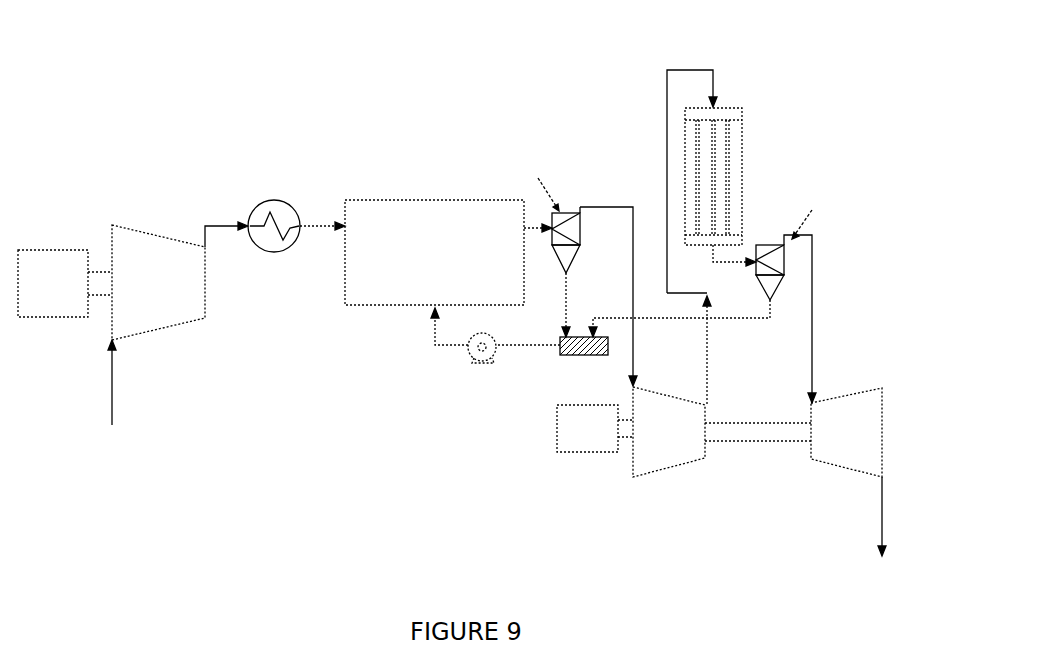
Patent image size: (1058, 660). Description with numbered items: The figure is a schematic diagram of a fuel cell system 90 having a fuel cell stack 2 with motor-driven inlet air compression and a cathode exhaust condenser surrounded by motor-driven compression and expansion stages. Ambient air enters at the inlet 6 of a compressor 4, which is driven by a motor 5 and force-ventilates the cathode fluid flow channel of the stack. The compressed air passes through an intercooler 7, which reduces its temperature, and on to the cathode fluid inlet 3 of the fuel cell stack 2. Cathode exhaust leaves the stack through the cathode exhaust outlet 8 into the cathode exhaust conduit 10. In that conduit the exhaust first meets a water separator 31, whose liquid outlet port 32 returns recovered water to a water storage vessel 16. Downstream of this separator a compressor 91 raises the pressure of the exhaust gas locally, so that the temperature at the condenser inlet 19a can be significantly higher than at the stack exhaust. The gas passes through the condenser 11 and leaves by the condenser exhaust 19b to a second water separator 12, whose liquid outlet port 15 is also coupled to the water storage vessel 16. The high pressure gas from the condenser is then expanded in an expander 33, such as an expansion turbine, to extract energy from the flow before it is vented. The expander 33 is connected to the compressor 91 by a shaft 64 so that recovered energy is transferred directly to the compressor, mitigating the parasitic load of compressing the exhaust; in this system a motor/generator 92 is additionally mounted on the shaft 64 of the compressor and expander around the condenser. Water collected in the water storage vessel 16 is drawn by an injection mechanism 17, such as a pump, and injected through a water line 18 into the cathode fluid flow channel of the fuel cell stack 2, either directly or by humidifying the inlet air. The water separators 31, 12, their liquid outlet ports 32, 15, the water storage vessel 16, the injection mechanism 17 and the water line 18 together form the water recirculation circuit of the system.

The fuel cell system 90 is at (172, 61).
The fuel cell stack 2 is at (405, 200).
The cathode fluid inlet 3 is at (318, 228).
The compressor 4 is at (168, 322).
The motor 5 is at (45, 307).
The inlet 6 is at (115, 391).
The intercooler 7 is at (262, 201).
The cathode exhaust outlet 8 is at (529, 228).
The cathode exhaust conduit 10 is at (633, 296).
The condenser 11 is at (742, 165).
The water separator 12 is at (770, 246).
The liquid outlet port 15 is at (764, 289).
The water storage vessel 16 is at (565, 372).
The injection mechanism 17 is at (468, 350).
The water line 18 is at (430, 331).
The condenser inlet 19a is at (718, 96).
The condenser exhaust 19b is at (712, 250).
The water separator 31 is at (580, 229).
The liquid outlet port 32 is at (567, 272).
The expander 33 is at (870, 427).
The shaft 64 is at (748, 437).
The compressor 91 is at (663, 455).
The motor/generator 92 is at (570, 445).